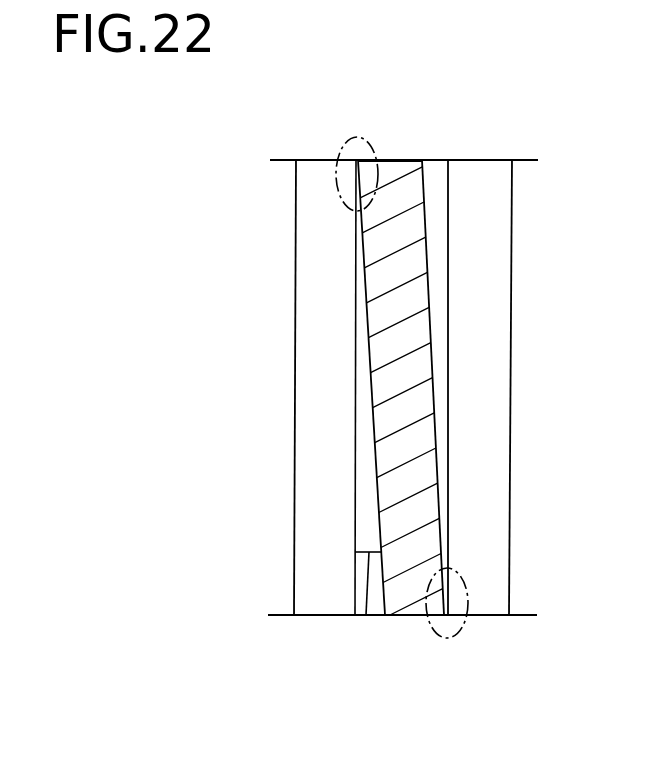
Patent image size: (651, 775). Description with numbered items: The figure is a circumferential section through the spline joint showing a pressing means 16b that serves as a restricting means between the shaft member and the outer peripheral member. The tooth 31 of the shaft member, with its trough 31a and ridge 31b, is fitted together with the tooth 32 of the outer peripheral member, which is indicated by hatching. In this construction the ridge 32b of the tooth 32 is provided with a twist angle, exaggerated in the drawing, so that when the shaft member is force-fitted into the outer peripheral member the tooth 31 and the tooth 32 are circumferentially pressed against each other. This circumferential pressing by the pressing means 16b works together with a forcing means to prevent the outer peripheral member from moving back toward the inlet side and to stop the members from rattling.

The tooth of the shaft member 31 is at (322, 447).
The trough 31a is at (439, 349).
The ridge 31b is at (316, 600).
The tooth of the outer peripheral member 32 is at (412, 583).
The ridge 32b is at (388, 188).
The pressing means 16b is at (357, 140).